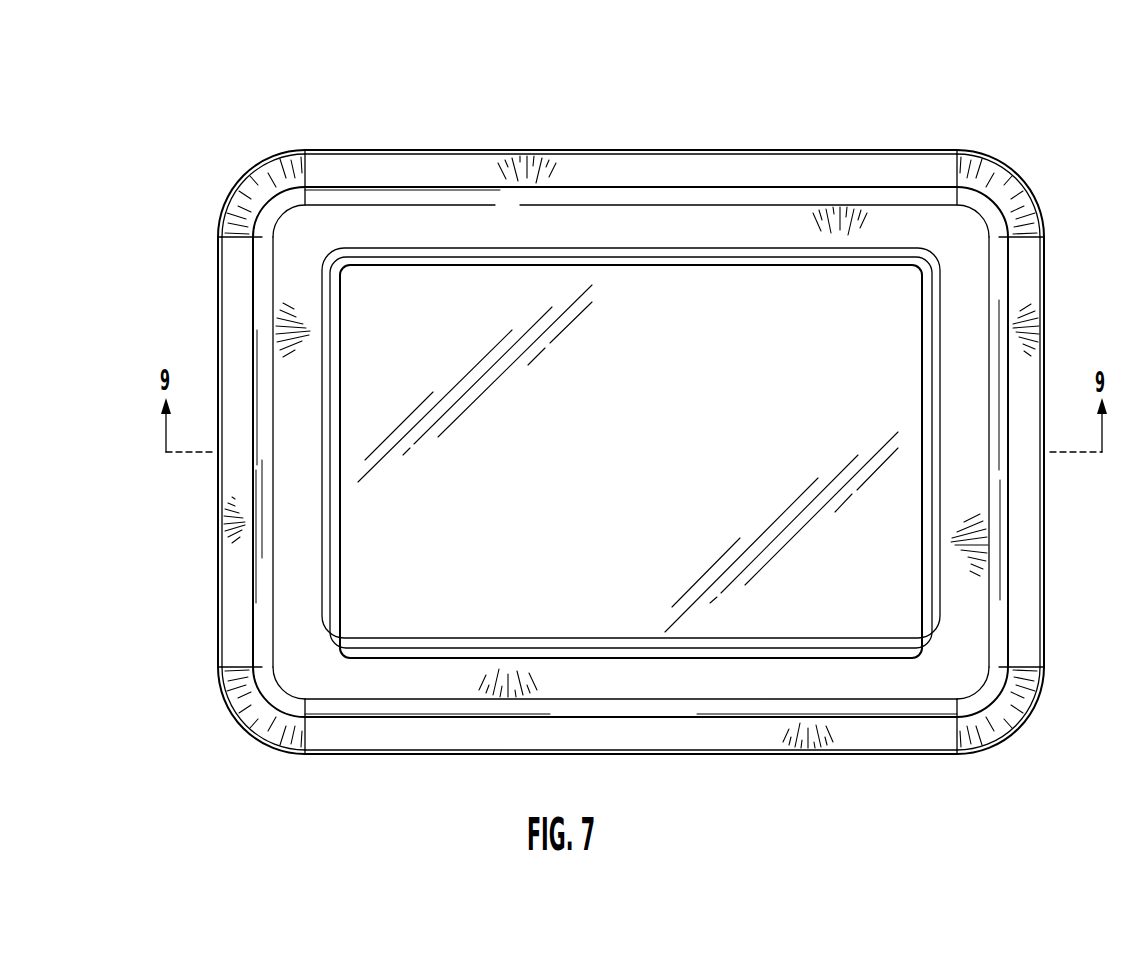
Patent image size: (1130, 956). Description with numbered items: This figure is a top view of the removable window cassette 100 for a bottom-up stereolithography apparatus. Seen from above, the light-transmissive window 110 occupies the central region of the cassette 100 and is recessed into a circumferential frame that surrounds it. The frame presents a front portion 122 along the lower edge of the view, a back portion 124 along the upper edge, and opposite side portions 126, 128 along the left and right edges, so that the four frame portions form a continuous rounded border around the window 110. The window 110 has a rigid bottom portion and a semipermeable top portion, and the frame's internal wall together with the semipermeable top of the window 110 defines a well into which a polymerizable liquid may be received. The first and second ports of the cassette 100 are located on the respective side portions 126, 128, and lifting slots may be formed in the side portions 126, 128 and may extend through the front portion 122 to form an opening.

The removable window cassette 100 is at (683, 68).
The light-transmissive window 110 is at (470, 310).
The front portion 122 is at (667, 733).
The back portion 124 is at (780, 167).
The side portion 126 is at (235, 335).
The side portion 128 is at (1030, 555).